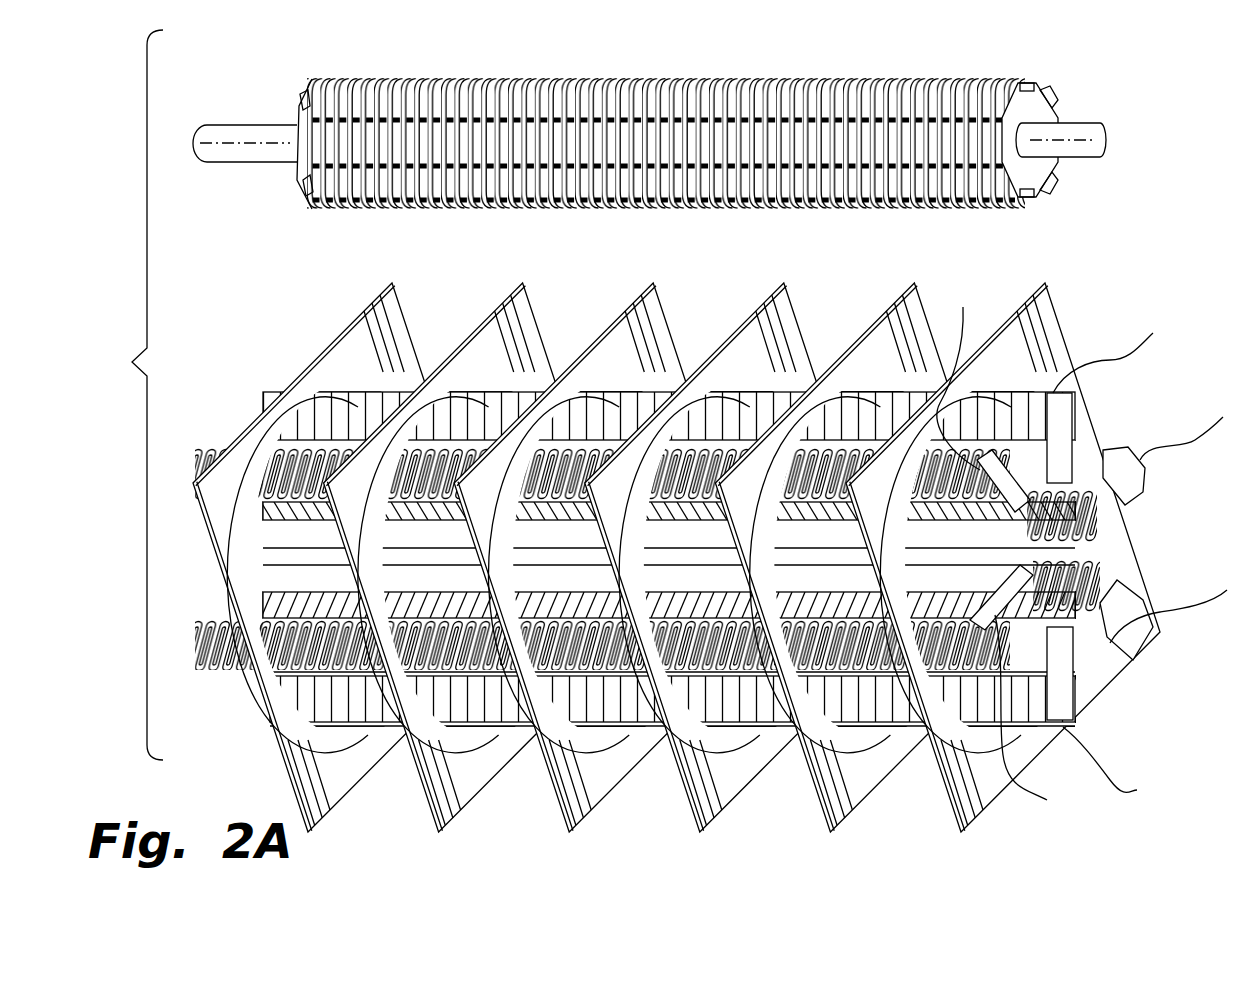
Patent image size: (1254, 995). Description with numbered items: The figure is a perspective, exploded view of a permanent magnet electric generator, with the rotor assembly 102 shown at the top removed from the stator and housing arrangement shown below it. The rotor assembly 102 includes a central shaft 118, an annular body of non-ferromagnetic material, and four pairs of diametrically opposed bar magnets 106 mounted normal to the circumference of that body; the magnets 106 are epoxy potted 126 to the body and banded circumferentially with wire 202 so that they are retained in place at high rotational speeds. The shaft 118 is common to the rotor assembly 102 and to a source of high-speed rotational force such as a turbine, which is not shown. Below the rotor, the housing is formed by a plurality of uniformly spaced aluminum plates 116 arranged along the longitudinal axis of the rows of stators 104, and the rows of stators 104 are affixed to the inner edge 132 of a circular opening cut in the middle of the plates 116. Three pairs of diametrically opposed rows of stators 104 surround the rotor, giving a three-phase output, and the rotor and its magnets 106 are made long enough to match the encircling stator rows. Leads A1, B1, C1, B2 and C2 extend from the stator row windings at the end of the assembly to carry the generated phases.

The rotor assembly 102 is at (701, 162).
The stators 104 is at (1133, 487).
The bar magnets 106 is at (305, 93).
The housing plates 116 is at (716, 577).
The central shaft 118 is at (1103, 153).
The epoxy potting 126 is at (296, 114).
The inner edge 132 is at (337, 383).
The wire 202 is at (318, 185).
The lead A1 is at (1153, 333).
The lead B1 is at (950, 375).
The lead C1 is at (1223, 417).
The lead B2 is at (1200, 613).
The lead C2 is at (1034, 732).